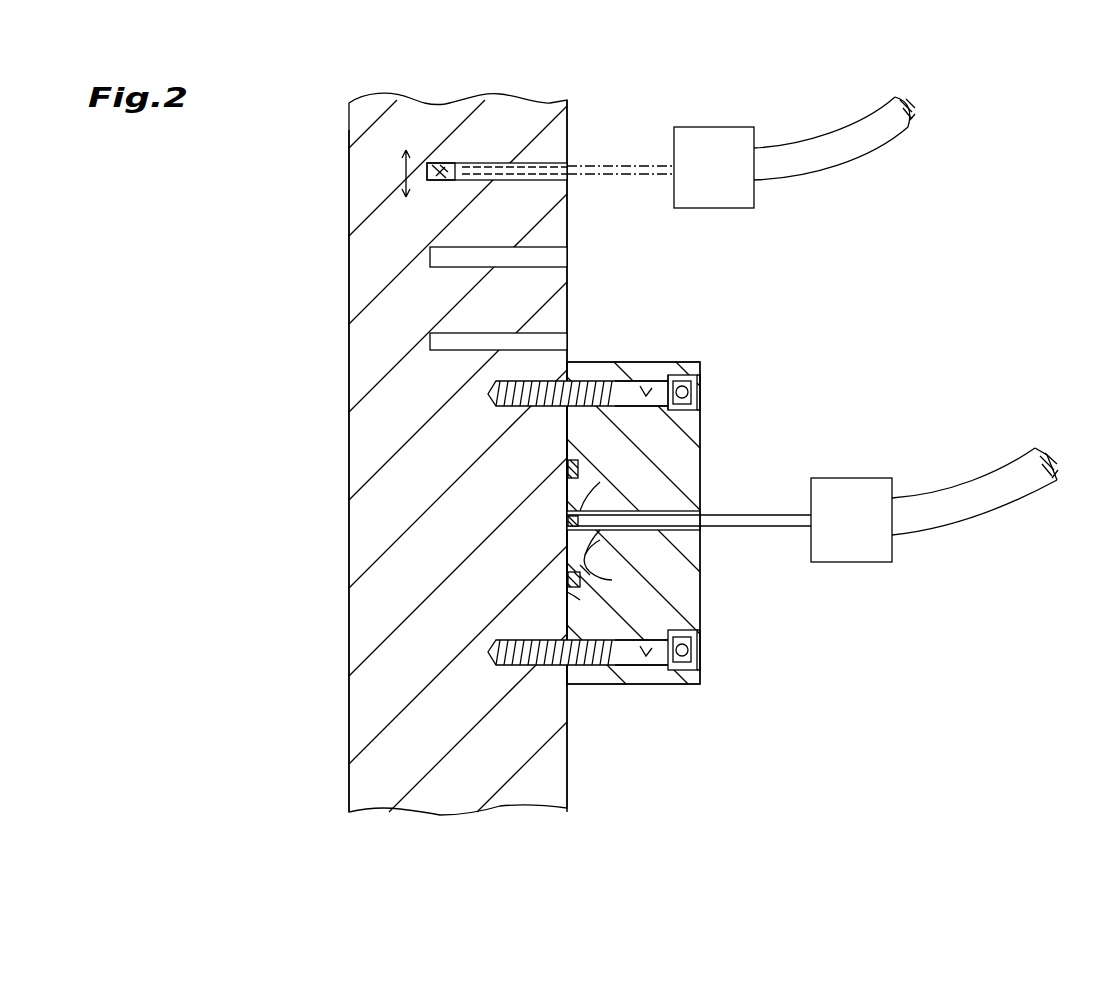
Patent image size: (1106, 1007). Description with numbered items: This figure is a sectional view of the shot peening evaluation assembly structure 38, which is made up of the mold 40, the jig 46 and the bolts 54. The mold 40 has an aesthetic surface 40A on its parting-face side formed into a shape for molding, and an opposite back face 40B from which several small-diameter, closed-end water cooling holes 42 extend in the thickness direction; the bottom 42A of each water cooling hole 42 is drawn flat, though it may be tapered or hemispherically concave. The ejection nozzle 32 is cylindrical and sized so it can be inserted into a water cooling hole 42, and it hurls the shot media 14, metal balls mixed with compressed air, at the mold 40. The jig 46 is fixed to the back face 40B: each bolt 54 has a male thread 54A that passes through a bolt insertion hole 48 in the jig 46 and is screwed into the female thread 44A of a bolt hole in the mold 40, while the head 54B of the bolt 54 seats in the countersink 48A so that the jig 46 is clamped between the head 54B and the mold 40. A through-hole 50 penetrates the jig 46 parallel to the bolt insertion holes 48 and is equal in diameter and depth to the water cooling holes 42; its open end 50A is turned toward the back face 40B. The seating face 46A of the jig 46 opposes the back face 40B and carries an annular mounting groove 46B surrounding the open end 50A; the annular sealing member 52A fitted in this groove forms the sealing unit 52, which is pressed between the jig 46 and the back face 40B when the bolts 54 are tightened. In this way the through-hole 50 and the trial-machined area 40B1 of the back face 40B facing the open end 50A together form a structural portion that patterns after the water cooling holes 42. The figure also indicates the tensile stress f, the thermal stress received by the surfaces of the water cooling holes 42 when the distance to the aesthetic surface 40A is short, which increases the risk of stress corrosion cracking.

The shot media 14 is at (568, 527).
The ejection nozzle 32 is at (606, 166).
The shot peening evaluation assembly structure 38 is at (708, 774).
The mold 40 is at (567, 100).
The aesthetic surface 40A is at (349, 124).
The back face 40B is at (567, 232).
The trial-machined area 40B1 is at (600, 512).
The water cooling hole 42 is at (449, 182).
The bottom of water cooling hole 42A is at (440, 160).
The female thread 44A is at (492, 408).
The jig 46 is at (700, 447).
The seating face 46A is at (567, 498).
The mounting groove 46B is at (580, 590).
The bolt insertion hole 48 is at (614, 379).
The countersink 48A is at (692, 380).
The through-hole 50 is at (600, 545).
The open end 50A is at (585, 572).
The sealing unit 52 is at (567, 598).
The sealing member 52A is at (568, 580).
The bolt 54 is at (650, 380).
The male thread 54A is at (545, 410).
The head of bolt 54B is at (698, 390).
The tensile stress f is at (402, 170).